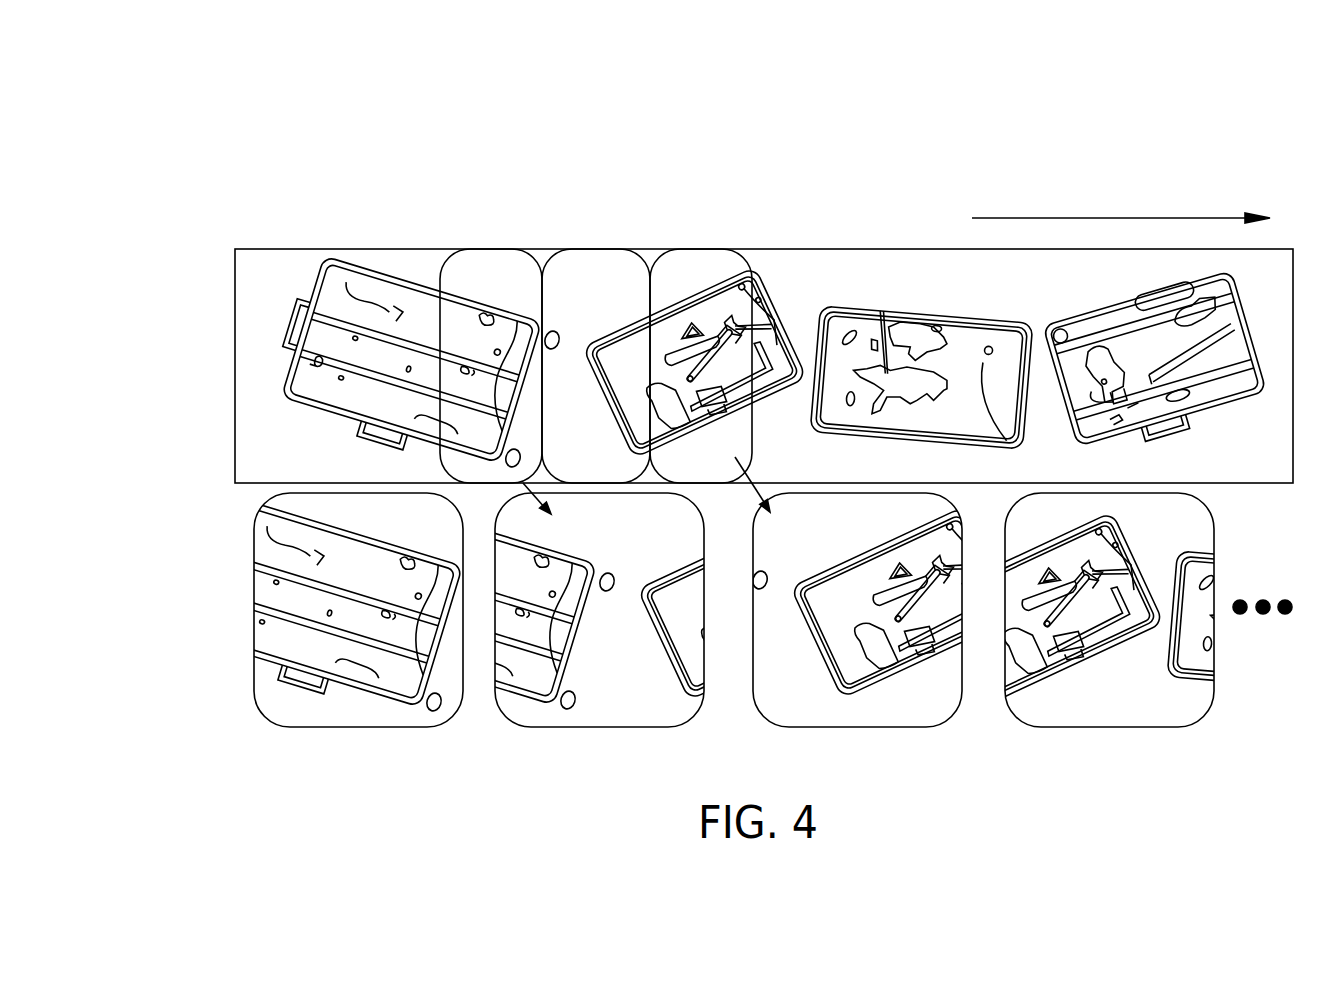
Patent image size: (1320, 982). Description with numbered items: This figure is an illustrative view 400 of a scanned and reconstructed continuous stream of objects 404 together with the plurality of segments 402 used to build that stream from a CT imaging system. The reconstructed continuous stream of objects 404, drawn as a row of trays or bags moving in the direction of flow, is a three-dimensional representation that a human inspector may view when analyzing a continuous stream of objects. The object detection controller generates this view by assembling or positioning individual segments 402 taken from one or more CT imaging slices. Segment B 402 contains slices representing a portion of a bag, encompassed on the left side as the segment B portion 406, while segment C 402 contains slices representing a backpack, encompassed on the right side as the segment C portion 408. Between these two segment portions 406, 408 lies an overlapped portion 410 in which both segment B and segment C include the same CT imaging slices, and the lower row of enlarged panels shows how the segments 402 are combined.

The illustrative view 400 is at (1172, 130).
The segments 402 is at (437, 278).
The reconstructed continuous stream of objects 404 is at (227, 249).
The segment B portion 406 is at (546, 243).
The segment C portion 408 is at (753, 243).
The overlapped portion 410 is at (650, 243).